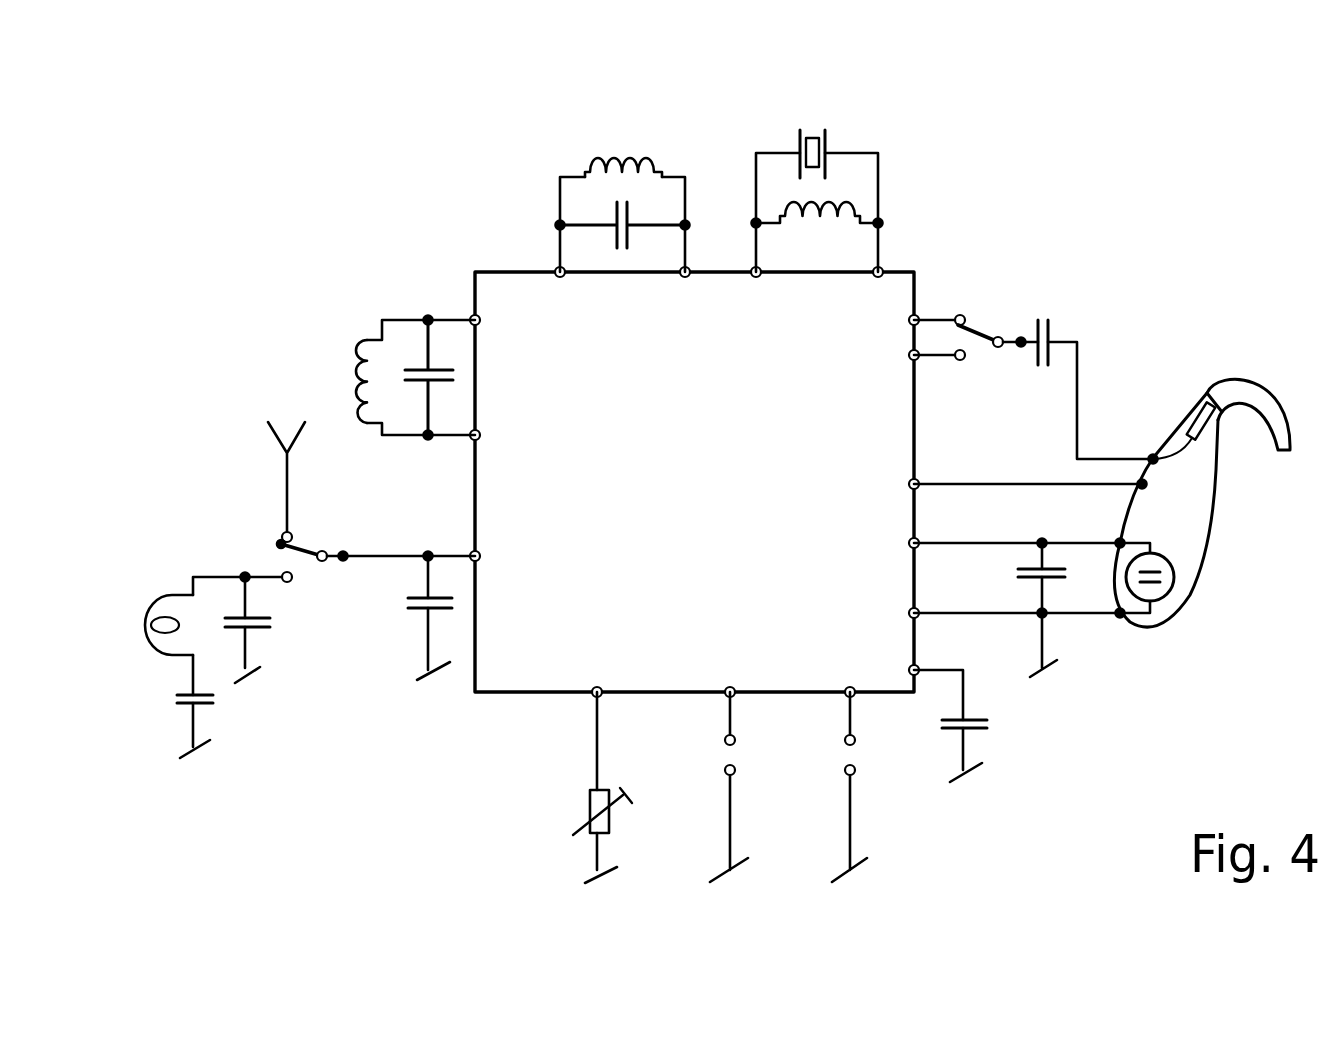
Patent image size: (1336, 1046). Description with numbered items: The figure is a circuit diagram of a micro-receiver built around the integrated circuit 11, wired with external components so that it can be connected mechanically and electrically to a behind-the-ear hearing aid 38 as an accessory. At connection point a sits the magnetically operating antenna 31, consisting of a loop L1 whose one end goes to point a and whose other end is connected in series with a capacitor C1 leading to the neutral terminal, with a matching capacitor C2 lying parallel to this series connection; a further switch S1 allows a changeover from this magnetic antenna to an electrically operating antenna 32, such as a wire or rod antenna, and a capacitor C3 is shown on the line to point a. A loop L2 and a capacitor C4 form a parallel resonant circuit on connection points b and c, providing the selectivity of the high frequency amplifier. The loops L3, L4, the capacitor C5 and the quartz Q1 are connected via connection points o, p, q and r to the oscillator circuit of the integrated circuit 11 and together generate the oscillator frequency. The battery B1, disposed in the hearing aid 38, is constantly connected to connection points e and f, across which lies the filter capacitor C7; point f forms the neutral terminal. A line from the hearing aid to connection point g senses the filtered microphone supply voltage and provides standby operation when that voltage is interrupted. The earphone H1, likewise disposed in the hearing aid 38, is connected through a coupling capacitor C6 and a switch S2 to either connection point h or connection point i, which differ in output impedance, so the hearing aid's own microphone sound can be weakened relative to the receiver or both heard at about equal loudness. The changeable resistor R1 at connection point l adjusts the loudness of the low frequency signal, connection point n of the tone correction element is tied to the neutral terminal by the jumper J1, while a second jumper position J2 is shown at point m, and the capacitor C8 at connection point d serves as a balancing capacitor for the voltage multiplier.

The integrated circuit 11 is at (688, 458).
The magnetically operating antenna 31 is at (209, 662).
The electrically operating antenna 32 is at (285, 487).
The hearing aid 38 is at (1200, 500).
The loop L1 is at (152, 655).
The loop L2 is at (358, 395).
The loop L3 is at (622, 156).
The loop L4 is at (848, 203).
The capacitor C1 is at (178, 708).
The matching capacitor C2 is at (258, 622).
The capacitor C3 is at (410, 607).
The capacitor C4 is at (415, 370).
The capacitor C5 is at (617, 210).
The coupling capacitor C6 is at (1052, 322).
The filter capacitor C7 is at (1027, 575).
The capacitor C8 is at (974, 729).
The switch S1 is at (305, 549).
The switch S2 is at (978, 330).
The quartz Q1 is at (812, 138).
The earphone H1 is at (1190, 420).
The battery B1 is at (1165, 580).
The changeable resistor R1 is at (590, 800).
The jumper J1 is at (848, 757).
The jack J2 is at (725, 757).